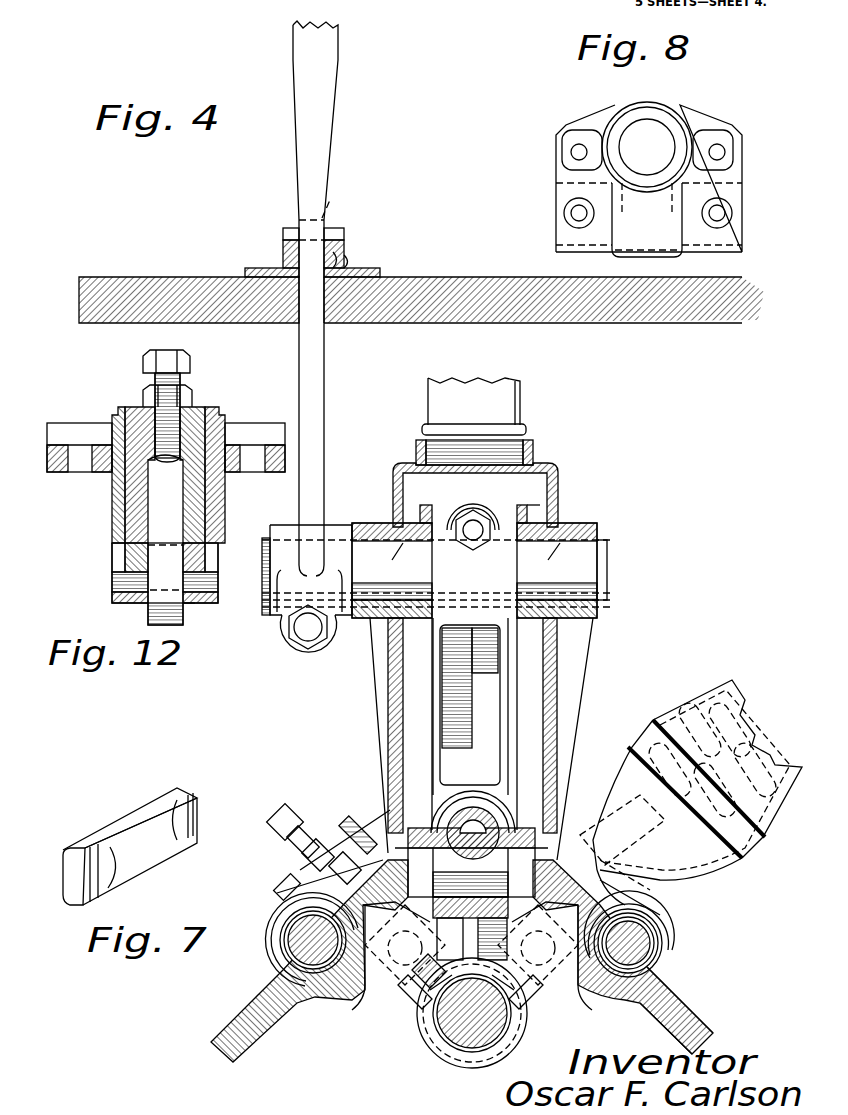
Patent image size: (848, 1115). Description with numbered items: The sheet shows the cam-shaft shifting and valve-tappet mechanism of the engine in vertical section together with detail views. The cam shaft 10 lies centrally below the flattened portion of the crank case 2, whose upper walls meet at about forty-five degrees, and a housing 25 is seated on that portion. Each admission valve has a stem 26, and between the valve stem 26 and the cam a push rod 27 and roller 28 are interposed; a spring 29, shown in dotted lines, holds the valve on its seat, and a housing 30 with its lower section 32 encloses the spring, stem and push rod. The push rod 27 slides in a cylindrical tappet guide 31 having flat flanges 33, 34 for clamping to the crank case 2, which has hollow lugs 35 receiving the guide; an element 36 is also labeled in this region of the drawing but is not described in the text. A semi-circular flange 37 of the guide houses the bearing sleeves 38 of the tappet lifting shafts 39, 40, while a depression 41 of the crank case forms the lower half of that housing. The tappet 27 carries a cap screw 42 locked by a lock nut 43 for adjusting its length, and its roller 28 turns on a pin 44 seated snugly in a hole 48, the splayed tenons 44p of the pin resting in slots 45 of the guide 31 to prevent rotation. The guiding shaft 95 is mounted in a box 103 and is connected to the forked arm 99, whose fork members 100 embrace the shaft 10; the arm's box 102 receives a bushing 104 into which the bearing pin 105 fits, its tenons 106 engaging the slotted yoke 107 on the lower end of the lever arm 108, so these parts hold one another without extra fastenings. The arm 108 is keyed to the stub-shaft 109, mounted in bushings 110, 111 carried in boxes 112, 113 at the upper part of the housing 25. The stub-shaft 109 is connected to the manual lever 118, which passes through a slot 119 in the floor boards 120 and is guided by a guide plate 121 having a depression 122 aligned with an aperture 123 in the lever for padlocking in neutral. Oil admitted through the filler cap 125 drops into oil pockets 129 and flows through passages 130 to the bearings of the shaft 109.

In FIG. 4, the crank case 2 is at (690, 1018).
In FIG. 4, the cam shaft 10 is at (465, 1032).
In FIG. 4, the housing 25 is at (552, 470).
In FIG. 4, the valve stem 26 is at (287, 812).
In FIG. 4, the push rod 27 is at (305, 835).
In FIG. 12, the push rod 27 is at (133, 492).
In FIG. 4, the roller 28 is at (408, 1000).
In FIG. 12, the roller 28 is at (158, 597).
In FIG. 4, the spring 29 is at (750, 702).
In FIG. 4, the housing 30 is at (683, 720).
In FIG. 4, the cylindrical housing 31 is at (603, 840).
In FIG. 8, the cylindrical housing 31 is at (668, 118).
In FIG. 12, the cylindrical housing 31 is at (212, 492).
In FIG. 4, the lower section 32 is at (655, 875).
In FIG. 8, the flat flange 33 is at (570, 140).
In FIG. 8, the flat flange 34 is at (708, 135).
In FIG. 4, the hollow lug 35 is at (368, 990).
In FIG. 4, the nub 36 is at (408, 988).
In FIG. 4, the semi-circular flange 37 is at (282, 935).
In FIG. 8, the semi-circular flange 37 is at (722, 210).
In FIG. 4, the bearing sleeve 38 is at (295, 960).
In FIG. 4, the tappet lifting shaft 39 is at (292, 925).
In FIG. 4, the tappet lifting shaft 40 is at (640, 940).
In FIG. 4, the depression 41 is at (318, 985).
In FIG. 12, the cap screw 42 is at (162, 368).
In FIG. 12, the lock nut 43 is at (186, 400).
In FIG. 12, the pin 44 is at (118, 598).
In FIG. 12, the tenon 44p is at (120, 582).
In FIG. 12, the slot 45 is at (117, 556).
In FIG. 12, the hole 48 is at (195, 605).
In FIG. 4, the guiding rod 95 is at (460, 833).
In FIG. 4, the forked arm 99 is at (510, 1027).
In FIG. 4, the fork member 100 is at (430, 1027).
In FIG. 4, the box 102 is at (513, 823).
In FIG. 4, the box 103 is at (473, 827).
In FIG. 4, the bushing 104 is at (450, 873).
In FIG. 4, the bearing pin 105 is at (433, 873).
In FIG. 7, the bearing pin 105 is at (153, 848).
In FIG. 4, the tenon 106 is at (417, 860).
In FIG. 7, the tenon 106 is at (95, 863).
In FIG. 4, the yoke 107 is at (507, 807).
In FIG. 4, the lever arm 108 is at (493, 690).
In FIG. 4, the stub-shaft 109 is at (590, 567).
In FIG. 4, the bushing 110 is at (400, 528).
In FIG. 4, the bushing 111 is at (548, 540).
In FIG. 4, the box 112 is at (360, 620).
In FIG. 4, the box 113 is at (575, 620).
In FIG. 4, the manual lever 118 is at (315, 58).
In FIG. 4, the slot 119 is at (350, 270).
In FIG. 4, the floor boards 120 is at (500, 300).
In FIG. 4, the guide plate 121 is at (345, 255).
In FIG. 4, the depression 122 is at (293, 228).
In FIG. 4, the aperture 123 is at (330, 200).
In FIG. 4, the filler cap 125 is at (492, 397).
In FIG. 4, the oil pocket 129 is at (513, 510).
In FIG. 4, the passage 130 is at (465, 564).